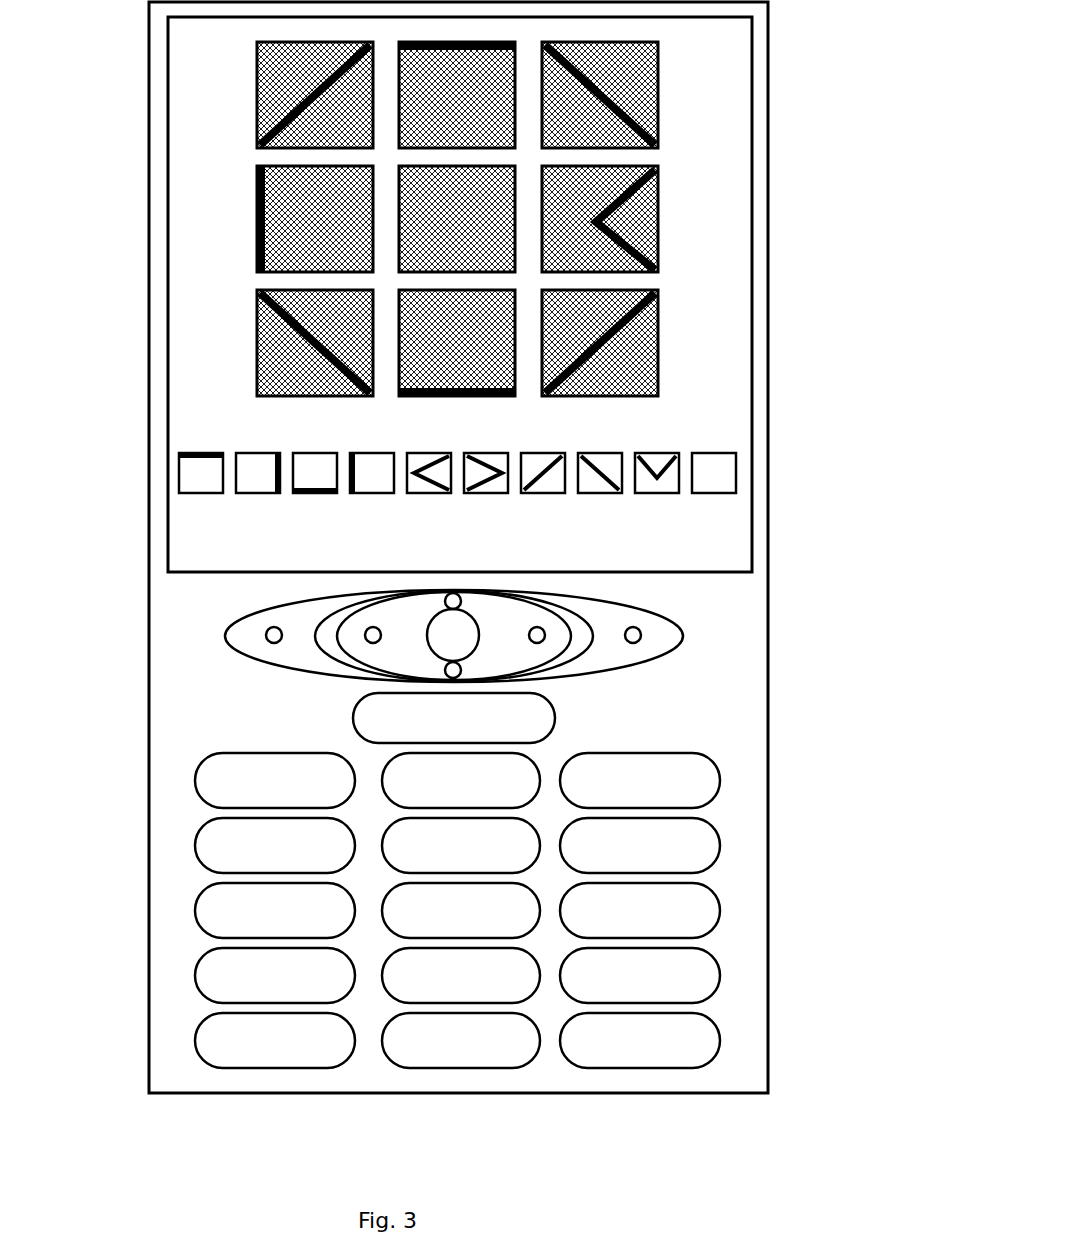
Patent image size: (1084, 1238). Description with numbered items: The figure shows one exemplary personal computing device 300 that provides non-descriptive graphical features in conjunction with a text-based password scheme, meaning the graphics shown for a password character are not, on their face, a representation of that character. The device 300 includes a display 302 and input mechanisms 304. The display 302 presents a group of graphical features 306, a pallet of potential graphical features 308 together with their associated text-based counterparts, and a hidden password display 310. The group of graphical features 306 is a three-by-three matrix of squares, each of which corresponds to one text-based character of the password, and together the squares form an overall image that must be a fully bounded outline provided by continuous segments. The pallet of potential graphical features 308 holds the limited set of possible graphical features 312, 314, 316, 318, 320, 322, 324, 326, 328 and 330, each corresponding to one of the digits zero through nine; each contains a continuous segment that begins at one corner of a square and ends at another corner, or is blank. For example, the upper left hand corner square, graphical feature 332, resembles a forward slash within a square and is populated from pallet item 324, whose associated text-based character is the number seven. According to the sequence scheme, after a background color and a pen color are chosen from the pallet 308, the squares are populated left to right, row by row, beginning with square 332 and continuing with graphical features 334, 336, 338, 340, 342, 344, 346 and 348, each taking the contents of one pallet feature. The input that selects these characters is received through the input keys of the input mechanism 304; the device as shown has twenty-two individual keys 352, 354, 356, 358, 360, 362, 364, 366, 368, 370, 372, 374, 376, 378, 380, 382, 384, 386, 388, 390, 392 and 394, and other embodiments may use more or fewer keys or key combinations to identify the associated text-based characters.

The personal computing device 300 is at (149, 95).
The display 302 is at (168, 173).
The input mechanisms 304 is at (493, 825).
The group of graphical features 306 is at (542, 222).
The pallet of potential graphical features 308 is at (496, 419).
The hidden password display 310 is at (590, 552).
The graphical feature 312 is at (187, 453).
The graphical feature 314 is at (244, 453).
The graphical feature 316 is at (301, 453).
The graphical feature 318 is at (358, 453).
The graphical feature 320 is at (415, 453).
The graphical feature 322 is at (472, 453).
The graphical feature 324 is at (529, 453).
The graphical feature 326 is at (586, 453).
The graphical feature 328 is at (643, 453).
The graphical feature 330 is at (700, 453).
The graphical feature 332 is at (257, 60).
The graphical feature 334 is at (452, 44).
The graphical feature 336 is at (658, 50).
The graphical feature 338 is at (257, 193).
The graphical feature 340 is at (490, 165).
The graphical feature 342 is at (658, 190).
The graphical feature 344 is at (257, 333).
The graphical feature 346 is at (420, 398).
The graphical feature 348 is at (658, 313).
The input key 352 is at (274, 643).
The input key 354 is at (639, 630).
The input key 356 is at (366, 627).
The input key 358 is at (543, 628).
The input key 360 is at (461, 601).
The input key 362 is at (461, 672).
The input key 364 is at (353, 712).
The input key 366 is at (198, 787).
The input key 368 is at (386, 785).
The input key 370 is at (564, 785).
The input key 372 is at (198, 852).
The input key 374 is at (386, 850).
The input key 376 is at (564, 850).
The input key 378 is at (198, 917).
The input key 380 is at (386, 915).
The input key 382 is at (564, 915).
The input key 384 is at (198, 982).
The input key 386 is at (386, 980).
The input key 388 is at (564, 980).
The input key 390 is at (198, 1042).
The input key 392 is at (386, 1045).
The input key 394 is at (564, 1045).